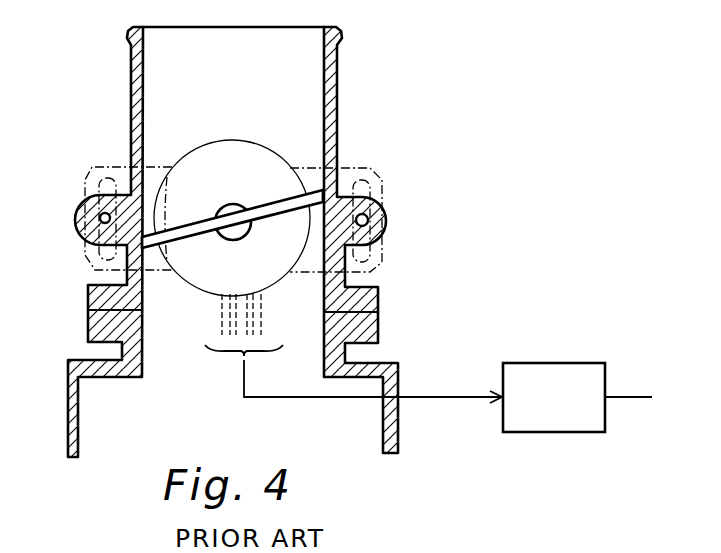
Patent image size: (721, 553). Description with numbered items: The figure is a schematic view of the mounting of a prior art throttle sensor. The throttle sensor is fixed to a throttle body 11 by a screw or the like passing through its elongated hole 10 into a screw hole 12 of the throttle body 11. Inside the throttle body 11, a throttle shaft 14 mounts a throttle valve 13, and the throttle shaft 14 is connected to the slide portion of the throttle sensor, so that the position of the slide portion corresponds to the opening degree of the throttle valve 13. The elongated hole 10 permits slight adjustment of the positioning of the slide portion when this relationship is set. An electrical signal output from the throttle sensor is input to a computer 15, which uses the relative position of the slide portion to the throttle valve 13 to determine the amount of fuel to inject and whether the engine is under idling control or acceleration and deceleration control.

The elongated hole 10 is at (106, 188).
The throttle body 11 is at (339, 108).
The screw hole 12 is at (89, 242).
The throttle valve 13 is at (277, 190).
The throttle shaft 14 is at (224, 204).
The computer 15 is at (592, 372).